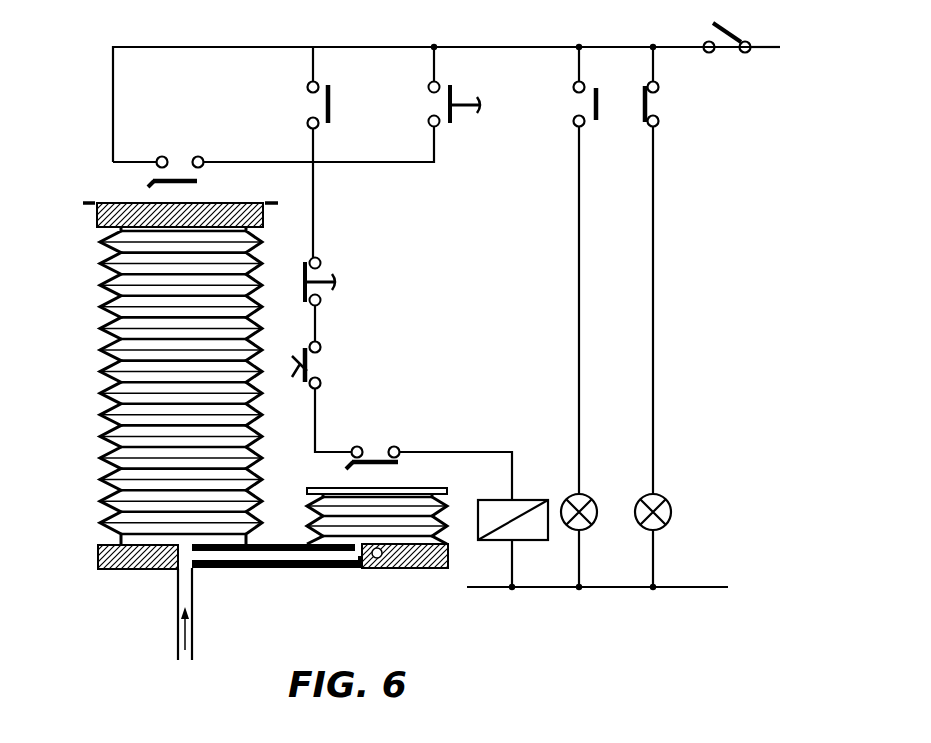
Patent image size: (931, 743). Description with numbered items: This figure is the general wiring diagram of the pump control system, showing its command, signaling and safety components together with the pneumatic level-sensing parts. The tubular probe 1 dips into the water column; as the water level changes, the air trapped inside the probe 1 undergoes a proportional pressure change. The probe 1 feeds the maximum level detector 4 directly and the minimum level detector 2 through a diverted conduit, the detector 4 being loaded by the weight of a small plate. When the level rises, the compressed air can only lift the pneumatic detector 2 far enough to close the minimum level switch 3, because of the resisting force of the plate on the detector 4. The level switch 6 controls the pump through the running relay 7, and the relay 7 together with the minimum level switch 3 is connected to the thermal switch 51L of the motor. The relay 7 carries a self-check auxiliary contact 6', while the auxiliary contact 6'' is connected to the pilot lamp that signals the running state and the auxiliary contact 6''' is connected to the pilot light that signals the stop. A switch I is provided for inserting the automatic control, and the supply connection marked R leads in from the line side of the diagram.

The tubular probe 1 is at (184, 585).
The minimum level detector 2 is at (306, 523).
The minimum level switch 3 is at (368, 458).
The maximum level detector 4 is at (142, 410).
The level switch 6 is at (173, 150).
The self-check auxiliary contact 6' is at (333, 105).
The auxiliary contact 6'' is at (597, 128).
The auxiliary contact 6''' is at (669, 128).
The running relay 7 is at (545, 505).
The thermal switch 51L is at (327, 365).
The switch for inserting automatic control I is at (733, 40).
The supply terminal R is at (779, 39).